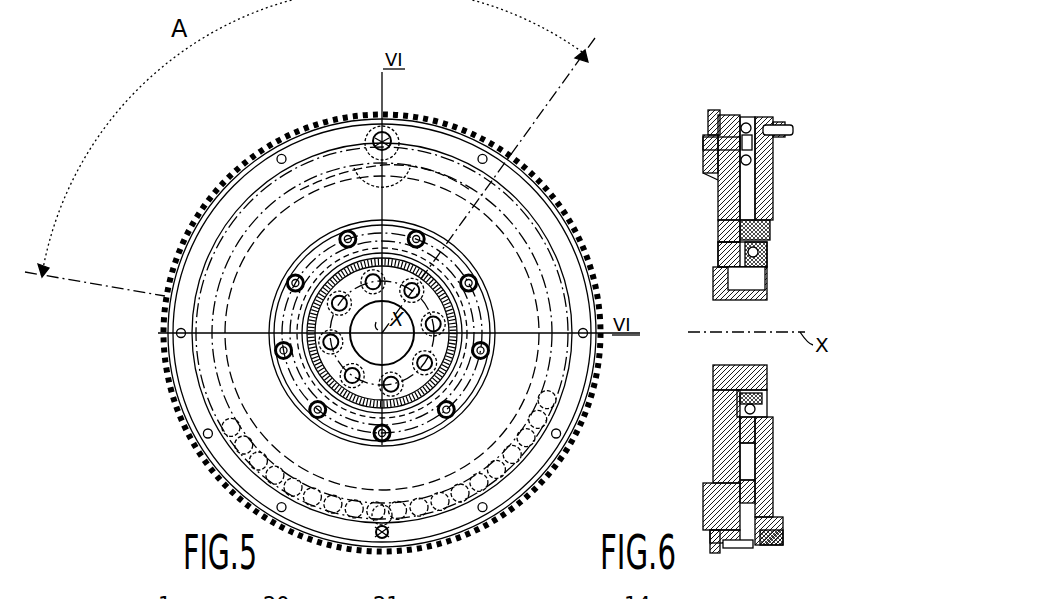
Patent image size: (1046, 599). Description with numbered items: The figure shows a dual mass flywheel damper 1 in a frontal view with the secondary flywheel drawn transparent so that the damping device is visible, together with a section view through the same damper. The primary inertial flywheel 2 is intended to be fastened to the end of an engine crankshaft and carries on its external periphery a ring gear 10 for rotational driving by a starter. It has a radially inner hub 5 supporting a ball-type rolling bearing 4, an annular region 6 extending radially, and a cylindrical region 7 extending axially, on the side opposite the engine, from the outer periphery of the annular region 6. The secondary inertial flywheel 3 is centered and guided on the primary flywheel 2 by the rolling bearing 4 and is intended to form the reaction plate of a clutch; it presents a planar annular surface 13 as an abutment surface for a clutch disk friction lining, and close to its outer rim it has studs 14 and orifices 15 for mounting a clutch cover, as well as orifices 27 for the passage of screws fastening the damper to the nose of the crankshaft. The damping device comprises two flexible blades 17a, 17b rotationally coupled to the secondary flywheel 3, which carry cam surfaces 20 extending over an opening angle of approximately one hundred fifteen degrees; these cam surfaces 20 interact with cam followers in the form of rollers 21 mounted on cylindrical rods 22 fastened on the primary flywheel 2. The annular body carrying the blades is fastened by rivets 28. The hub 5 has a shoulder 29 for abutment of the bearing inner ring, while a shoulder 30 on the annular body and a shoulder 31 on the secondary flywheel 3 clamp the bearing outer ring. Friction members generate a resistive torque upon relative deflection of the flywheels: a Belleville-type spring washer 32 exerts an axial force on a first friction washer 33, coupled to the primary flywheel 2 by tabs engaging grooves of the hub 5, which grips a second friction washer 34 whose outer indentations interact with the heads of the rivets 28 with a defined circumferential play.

In FIG. 5, the dual mass flywheel damper 1 is at (243, 132).
In FIG. 6, the dual mass flywheel damper 1 is at (805, 225).
In FIG. 5, the primary inertial flywheel 2 is at (382, 333).
In FIG. 6, the primary inertial flywheel 2 is at (738, 176).
In FIG. 6, the secondary inertial flywheel 3 is at (765, 183).
In FIG. 6, the rolling bearing 4 is at (765, 258).
In FIG. 5, the radially inner hub 5 is at (507, 183).
In FIG. 6, the radially inner hub 5 is at (768, 376).
In FIG. 6, the annular region 6 is at (720, 198).
In FIG. 6, the cylindrical region 7 is at (740, 115).
In FIG. 5, the ring gear 10 is at (222, 182).
In FIG. 6, the ring gear 10 is at (718, 553).
In FIG. 5, the planar annular surface 13 is at (512, 225).
In FIG. 6, the planar annular surface 13 is at (773, 160).
In FIG. 5, the studs 14 is at (398, 165).
In FIG. 6, the studs 14 is at (790, 126).
In FIG. 5, the orifices 15 is at (598, 348).
In FIG. 6, the orifices 15 is at (785, 535).
In FIG. 5, the flexible blade 17a is at (331, 188).
In FIG. 6, the flexible blade 17a is at (704, 141).
In FIG. 5, the flexible blade 17b is at (518, 427).
In FIG. 6, the flexible blade 17b is at (745, 490).
In FIG. 5, the cam surface 20 is at (403, 167).
In FIG. 5, the rollers 21 is at (375, 128).
In FIG. 6, the rollers 21 is at (749, 126).
In FIG. 5, the cylindrical rods 22 is at (380, 527).
In FIG. 6, the cylindrical rods 22 is at (727, 140).
In FIG. 5, the orifices 27 is at (315, 380).
In FIG. 6, the orifices 27 is at (755, 282).
In FIG. 5, the rivets 28 is at (382, 333).
In FIG. 6, the rivets 28 is at (765, 232).
In FIG. 6, the shoulder 29 is at (740, 258).
In FIG. 6, the shoulder 30 is at (735, 237).
In FIG. 6, the shoulder 31 is at (765, 418).
In FIG. 6, the spring washer 32 is at (762, 407).
In FIG. 6, the first friction washer 33 is at (738, 397).
In FIG. 6, the second friction washer 34 is at (740, 425).